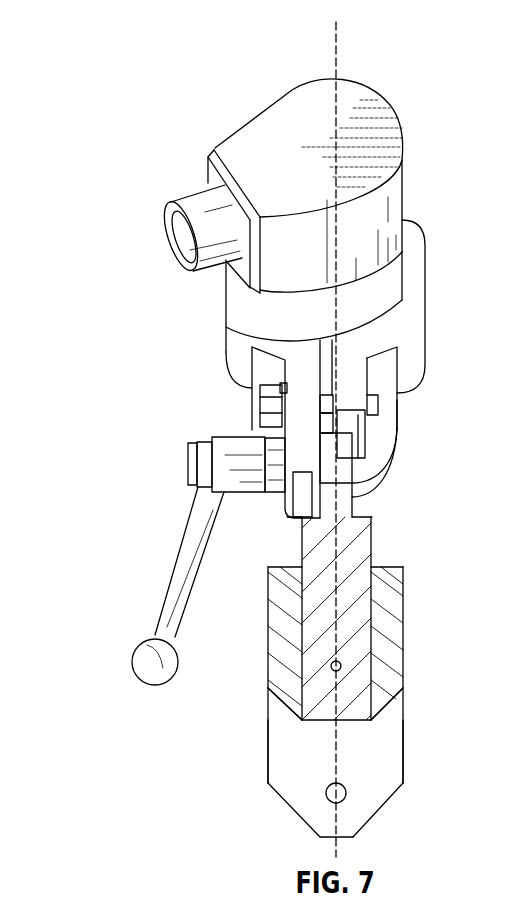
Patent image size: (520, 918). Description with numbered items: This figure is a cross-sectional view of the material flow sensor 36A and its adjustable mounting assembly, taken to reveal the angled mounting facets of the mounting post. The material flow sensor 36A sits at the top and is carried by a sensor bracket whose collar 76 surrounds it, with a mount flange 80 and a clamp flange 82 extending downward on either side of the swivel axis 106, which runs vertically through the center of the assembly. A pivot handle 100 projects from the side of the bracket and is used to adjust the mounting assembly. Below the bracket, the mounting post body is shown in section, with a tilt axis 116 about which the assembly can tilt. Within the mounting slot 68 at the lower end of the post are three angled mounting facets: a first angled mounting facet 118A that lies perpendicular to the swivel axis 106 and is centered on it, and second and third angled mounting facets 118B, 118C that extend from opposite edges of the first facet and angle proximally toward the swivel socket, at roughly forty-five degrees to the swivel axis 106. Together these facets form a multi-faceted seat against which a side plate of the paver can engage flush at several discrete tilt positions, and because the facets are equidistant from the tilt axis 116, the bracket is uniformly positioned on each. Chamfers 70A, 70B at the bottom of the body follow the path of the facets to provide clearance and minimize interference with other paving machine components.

The material flow sensor 36A is at (316, 98).
The swivel axis 106 is at (371, 65).
The collar 76 is at (414, 300).
The mount flange 80 is at (295, 410).
The clamp flange 82 is at (356, 393).
The pivot handle 100 is at (166, 588).
The tilt axis 116 is at (430, 621).
The first angled mounting facet 118A is at (310, 720).
The second angled mounting facet 118B is at (283, 707).
The third angled mounting facet 118C is at (390, 700).
The mounting slot 68 is at (392, 752).
The chamfer 70A is at (290, 812).
The chamfer 70B is at (380, 812).